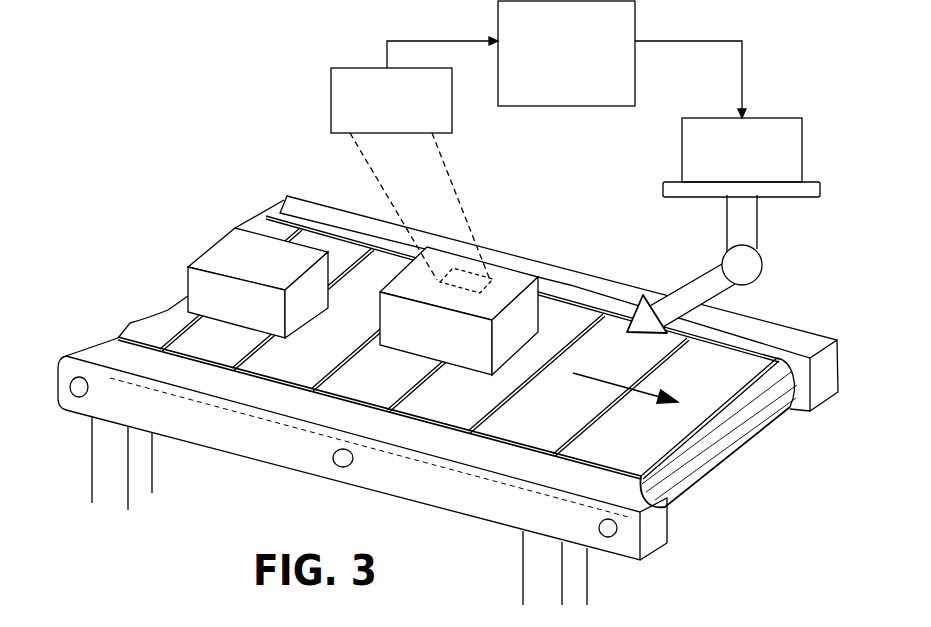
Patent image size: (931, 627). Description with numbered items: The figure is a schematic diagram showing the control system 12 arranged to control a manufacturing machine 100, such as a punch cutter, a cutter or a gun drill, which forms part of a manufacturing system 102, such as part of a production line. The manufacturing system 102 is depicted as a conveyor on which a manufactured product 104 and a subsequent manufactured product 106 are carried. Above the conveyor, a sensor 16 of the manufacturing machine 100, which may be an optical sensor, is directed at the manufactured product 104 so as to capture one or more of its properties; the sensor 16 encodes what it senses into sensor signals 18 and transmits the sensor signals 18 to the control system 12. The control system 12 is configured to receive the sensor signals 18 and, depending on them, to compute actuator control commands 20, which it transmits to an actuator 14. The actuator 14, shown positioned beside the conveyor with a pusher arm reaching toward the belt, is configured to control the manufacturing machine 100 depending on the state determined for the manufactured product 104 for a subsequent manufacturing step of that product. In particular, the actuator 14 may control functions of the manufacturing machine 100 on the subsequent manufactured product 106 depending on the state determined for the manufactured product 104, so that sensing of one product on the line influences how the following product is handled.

The control system 12 is at (543, 106).
The actuator 14 is at (770, 118).
The sensor 16 is at (358, 67).
The sensor signals 18 is at (448, 41).
The actuator control commands 20 is at (680, 40).
The manufacturing machine 100 is at (700, 278).
The manufacturing system 102 is at (735, 464).
The manufactured product 104 is at (512, 268).
The subsequent manufactured product 106 is at (240, 228).